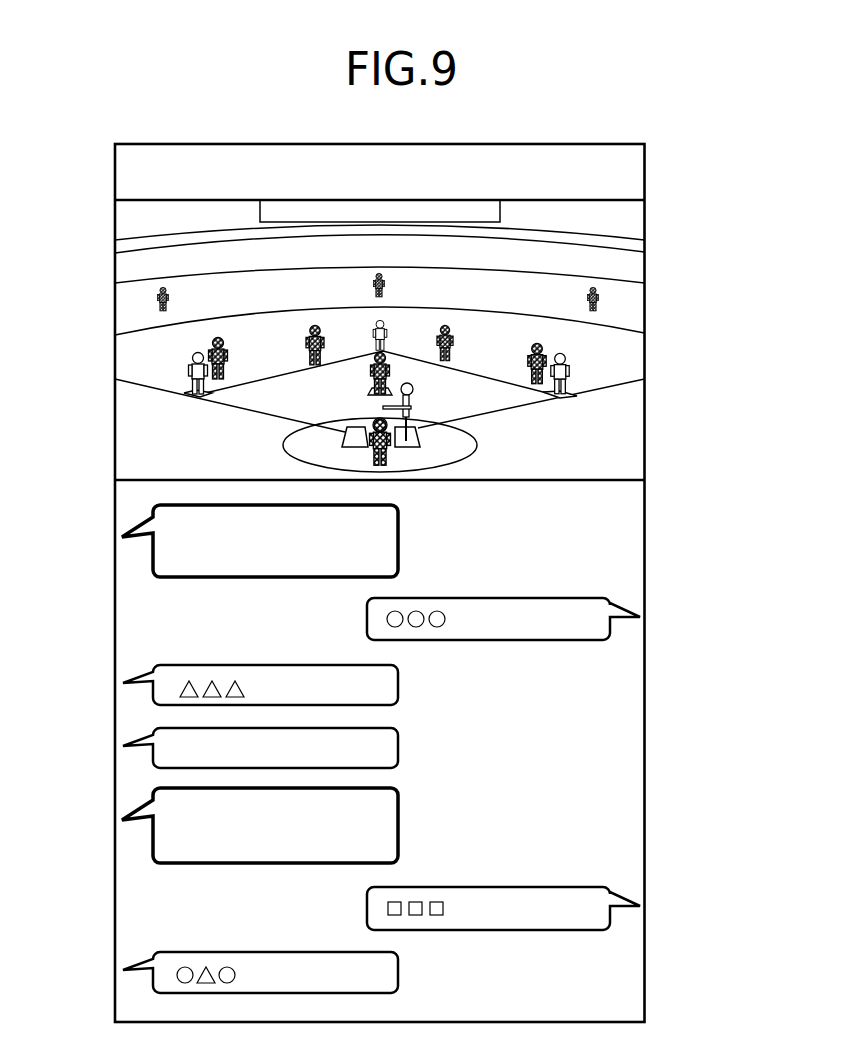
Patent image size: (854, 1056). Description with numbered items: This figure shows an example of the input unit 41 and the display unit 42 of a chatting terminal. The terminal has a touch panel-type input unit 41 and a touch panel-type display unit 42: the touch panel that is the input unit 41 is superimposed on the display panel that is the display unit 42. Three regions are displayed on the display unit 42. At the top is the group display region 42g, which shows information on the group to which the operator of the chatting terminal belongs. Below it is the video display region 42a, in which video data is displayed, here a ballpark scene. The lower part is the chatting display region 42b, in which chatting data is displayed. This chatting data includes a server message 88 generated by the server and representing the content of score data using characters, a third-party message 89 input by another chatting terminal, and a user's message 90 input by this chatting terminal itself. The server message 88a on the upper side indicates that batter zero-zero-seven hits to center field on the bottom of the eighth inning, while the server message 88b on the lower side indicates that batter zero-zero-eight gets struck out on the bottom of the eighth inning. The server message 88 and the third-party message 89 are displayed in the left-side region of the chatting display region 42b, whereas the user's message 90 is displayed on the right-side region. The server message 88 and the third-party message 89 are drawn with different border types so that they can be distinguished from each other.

The input unit 41 is at (401, 583).
The display unit 42 is at (645, 175).
The group display region 42g is at (110, 145).
The video display region 42a is at (110, 204).
The chatting display region 42b is at (401, 751).
The server message 88 is at (439, 684).
The server message 88a is at (398, 531).
The server message 88b is at (398, 826).
The third-party message 89 is at (398, 684).
The user's message 90 is at (596, 595).